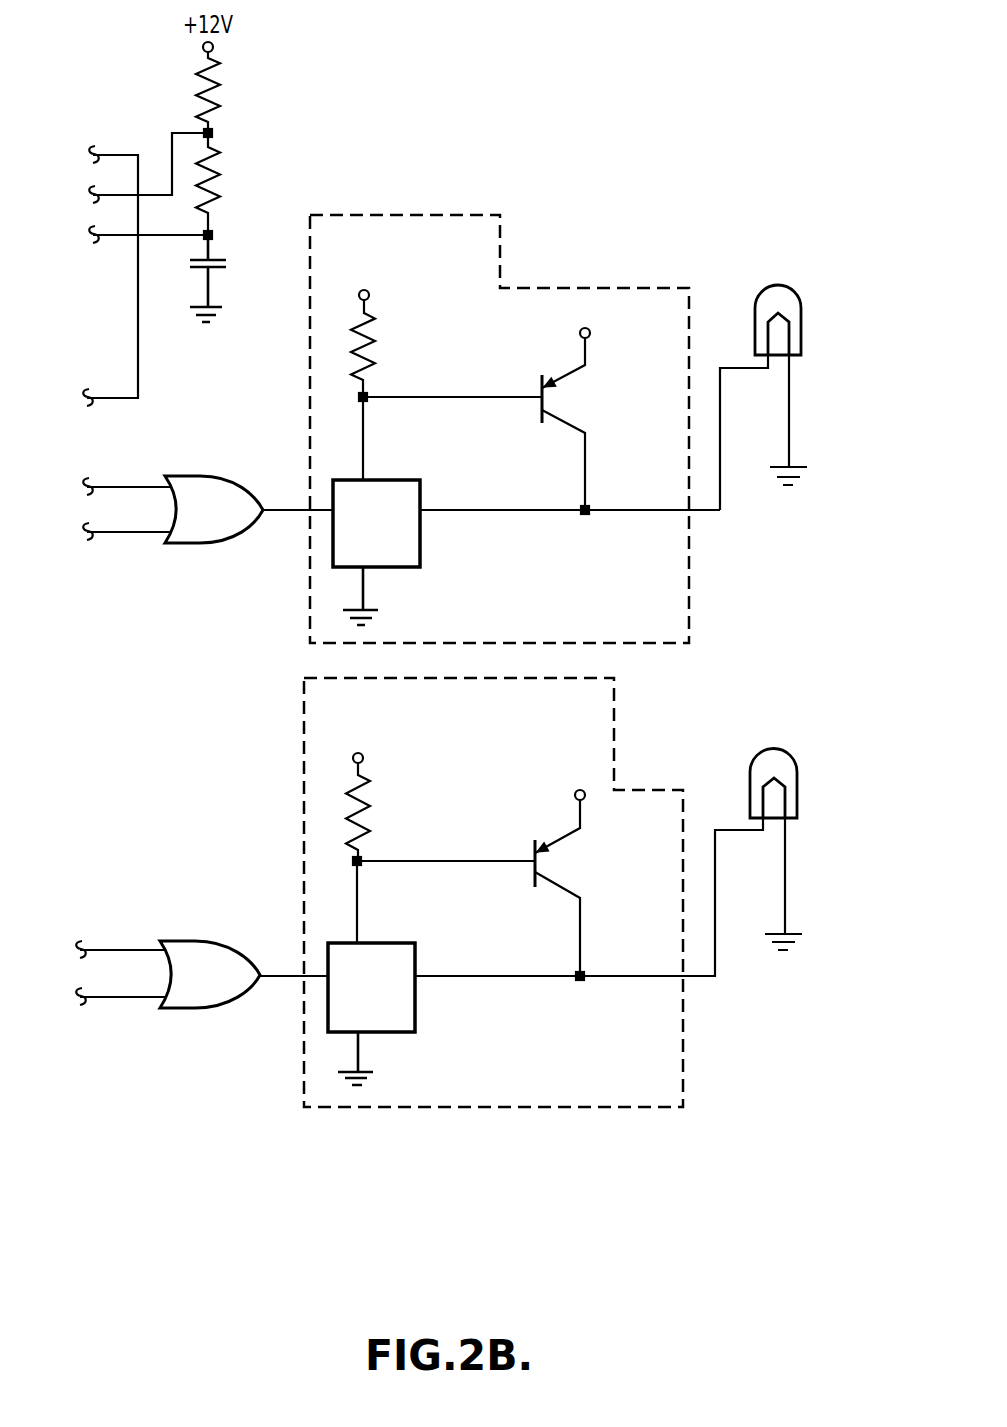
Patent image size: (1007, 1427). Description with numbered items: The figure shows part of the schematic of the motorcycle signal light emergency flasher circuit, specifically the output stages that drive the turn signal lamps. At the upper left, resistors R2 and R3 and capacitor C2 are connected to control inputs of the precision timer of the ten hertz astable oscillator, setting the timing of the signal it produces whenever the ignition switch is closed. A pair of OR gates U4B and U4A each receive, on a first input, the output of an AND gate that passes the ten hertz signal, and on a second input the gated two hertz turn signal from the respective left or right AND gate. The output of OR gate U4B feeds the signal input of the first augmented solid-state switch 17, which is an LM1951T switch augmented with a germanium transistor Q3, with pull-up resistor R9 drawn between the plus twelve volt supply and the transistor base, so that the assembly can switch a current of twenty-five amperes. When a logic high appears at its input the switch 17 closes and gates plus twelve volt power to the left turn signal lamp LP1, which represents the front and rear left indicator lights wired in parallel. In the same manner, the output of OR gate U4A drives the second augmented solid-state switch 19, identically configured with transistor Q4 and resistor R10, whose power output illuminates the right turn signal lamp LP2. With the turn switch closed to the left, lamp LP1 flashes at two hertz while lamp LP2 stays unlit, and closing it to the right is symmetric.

The first augmented solid-state switch 17 is at (478, 212).
The second augmented solid-state switch 19 is at (302, 718).
The resistor R2 is at (235, 90).
The resistor R3 is at (240, 184).
The capacitor C2 is at (231, 280).
The OR gate U4B is at (208, 513).
The OR gate U4A is at (202, 979).
The resistor R9 10 R9 is at (376, 329).
The resistor R10 10 R10 is at (374, 790).
The germanium transistor Q3 is at (604, 403).
The germanium transistor of augmented switch Q4 is at (596, 865).
The left turn signal lamp LP1 is at (771, 366).
The right turn signal lamp LP2 is at (758, 834).